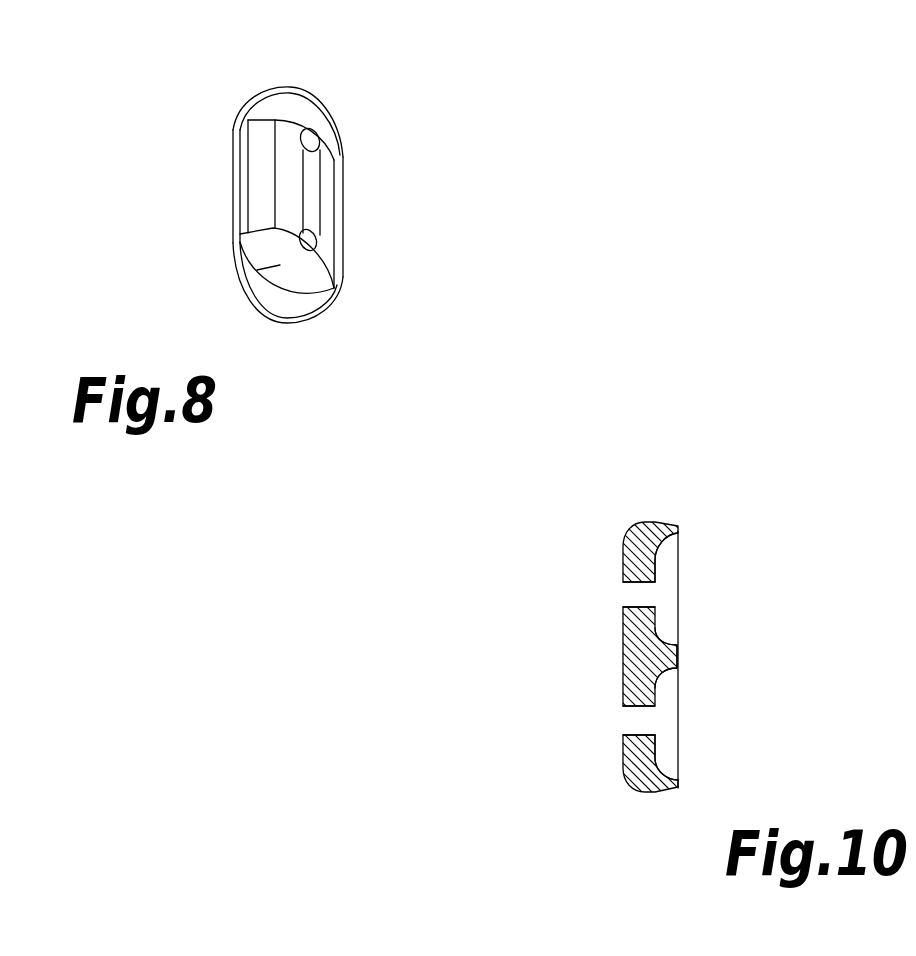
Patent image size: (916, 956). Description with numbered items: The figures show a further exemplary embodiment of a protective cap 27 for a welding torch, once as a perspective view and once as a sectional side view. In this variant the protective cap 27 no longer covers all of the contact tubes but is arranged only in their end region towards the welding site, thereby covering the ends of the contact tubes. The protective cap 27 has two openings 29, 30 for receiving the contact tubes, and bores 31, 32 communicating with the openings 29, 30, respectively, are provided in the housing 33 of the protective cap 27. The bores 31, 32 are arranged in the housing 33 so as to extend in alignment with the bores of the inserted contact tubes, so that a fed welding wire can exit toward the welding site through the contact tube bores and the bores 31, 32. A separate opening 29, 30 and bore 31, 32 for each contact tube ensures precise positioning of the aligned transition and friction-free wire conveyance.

In FIG. 8, the protective cap 27 is at (423, 118).
In FIG. 10, the protective cap 27 is at (735, 528).
In FIG. 10, the opening 29 is at (667, 588).
In FIG. 10, the opening 30 is at (660, 722).
In FIG. 8, the bore 31 is at (318, 138).
In FIG. 10, the bore 31 is at (633, 590).
In FIG. 8, the bore 32 is at (316, 243).
In FIG. 10, the bore 32 is at (635, 722).
In FIG. 8, the housing 33 is at (263, 185).
In FIG. 10, the housing 33 is at (635, 658).